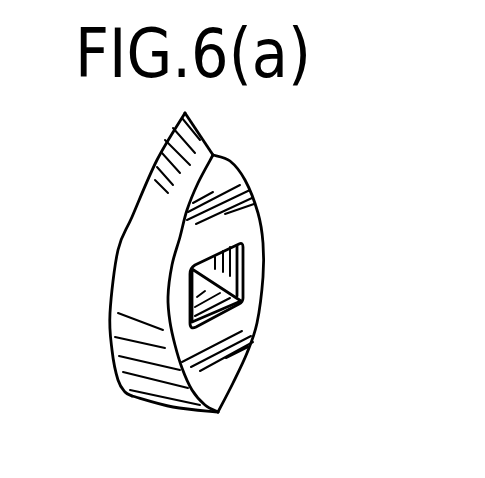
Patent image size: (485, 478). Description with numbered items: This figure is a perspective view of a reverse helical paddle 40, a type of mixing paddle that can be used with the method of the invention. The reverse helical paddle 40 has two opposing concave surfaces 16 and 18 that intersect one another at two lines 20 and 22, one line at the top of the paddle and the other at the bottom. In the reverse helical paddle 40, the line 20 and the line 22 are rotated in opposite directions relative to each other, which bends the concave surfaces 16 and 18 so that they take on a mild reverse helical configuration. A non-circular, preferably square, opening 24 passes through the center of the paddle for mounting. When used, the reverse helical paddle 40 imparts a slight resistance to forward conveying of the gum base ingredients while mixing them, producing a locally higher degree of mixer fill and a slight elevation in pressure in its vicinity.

The concave surface 16 is at (157, 232).
The concave surface 18 is at (262, 225).
The line 20 is at (198, 133).
The line 22 is at (175, 410).
The opening 24 is at (246, 281).
The reverse helical paddle 40 is at (258, 170).